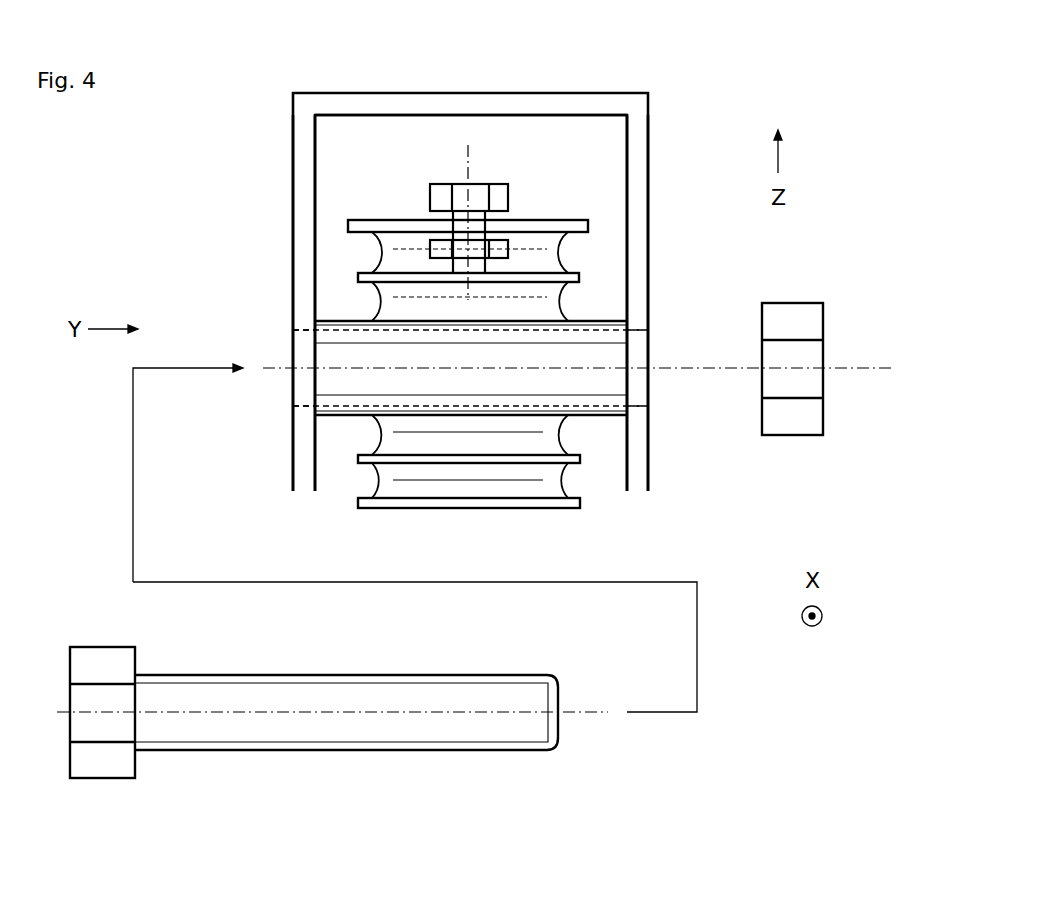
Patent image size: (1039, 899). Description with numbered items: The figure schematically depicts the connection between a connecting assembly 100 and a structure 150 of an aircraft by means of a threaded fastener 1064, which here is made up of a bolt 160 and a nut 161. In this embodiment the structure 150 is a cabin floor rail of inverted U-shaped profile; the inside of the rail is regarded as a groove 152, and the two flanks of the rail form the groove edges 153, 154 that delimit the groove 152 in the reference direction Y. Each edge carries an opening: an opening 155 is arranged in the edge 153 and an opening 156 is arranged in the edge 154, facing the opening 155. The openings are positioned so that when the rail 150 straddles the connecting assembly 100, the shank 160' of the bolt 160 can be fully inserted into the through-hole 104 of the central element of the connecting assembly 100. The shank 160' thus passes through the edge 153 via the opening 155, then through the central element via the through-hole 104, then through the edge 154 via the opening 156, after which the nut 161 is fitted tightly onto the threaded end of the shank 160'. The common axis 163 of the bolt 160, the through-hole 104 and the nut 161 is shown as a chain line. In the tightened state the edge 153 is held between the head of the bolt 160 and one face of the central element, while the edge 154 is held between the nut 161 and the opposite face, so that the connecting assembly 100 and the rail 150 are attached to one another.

The structure 150 is at (635, 125).
The groove 152 is at (350, 180).
The groove edge 153 is at (303, 218).
The groove edge 154 is at (640, 223).
The threaded fastener 1064 is at (455, 172).
The connecting assembly 100 is at (553, 207).
The through-hole 104 is at (323, 357).
The opening 155 is at (305, 388).
The opening 156 is at (637, 383).
The shaft axis 163 is at (868, 367).
The nut 161 is at (797, 424).
The bolt 160 is at (332, 747).
The shank 160' is at (346, 744).